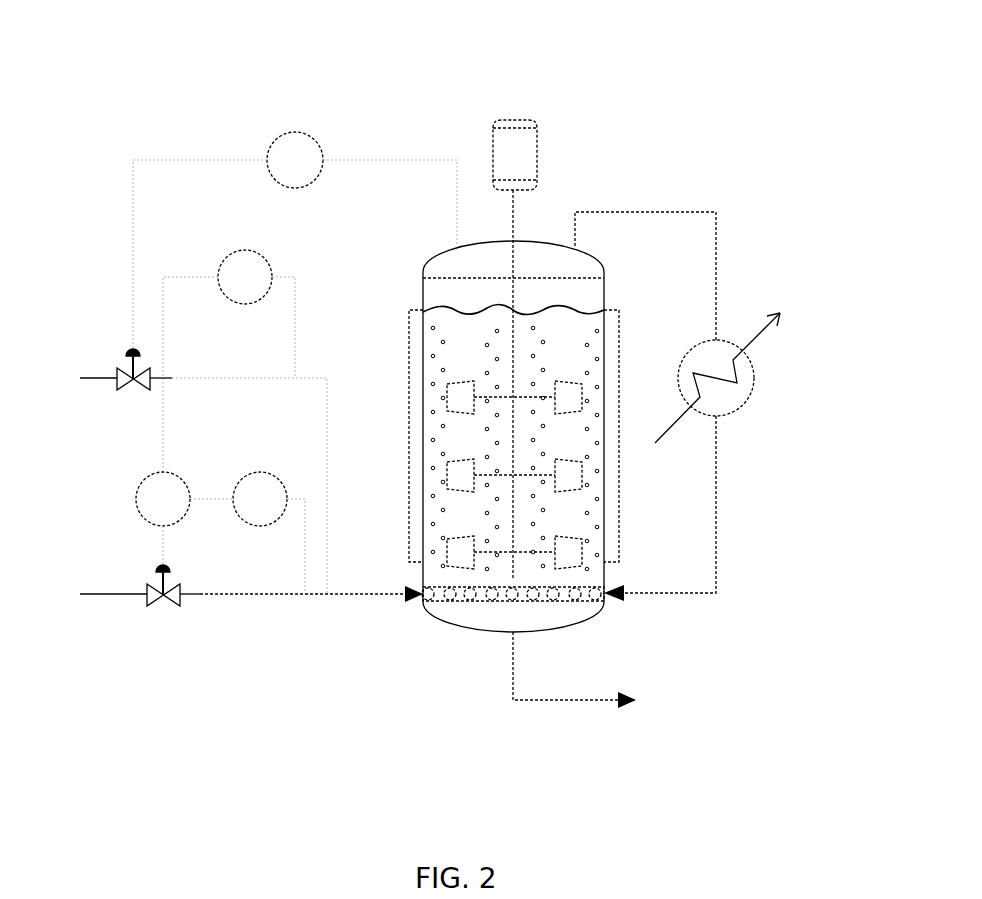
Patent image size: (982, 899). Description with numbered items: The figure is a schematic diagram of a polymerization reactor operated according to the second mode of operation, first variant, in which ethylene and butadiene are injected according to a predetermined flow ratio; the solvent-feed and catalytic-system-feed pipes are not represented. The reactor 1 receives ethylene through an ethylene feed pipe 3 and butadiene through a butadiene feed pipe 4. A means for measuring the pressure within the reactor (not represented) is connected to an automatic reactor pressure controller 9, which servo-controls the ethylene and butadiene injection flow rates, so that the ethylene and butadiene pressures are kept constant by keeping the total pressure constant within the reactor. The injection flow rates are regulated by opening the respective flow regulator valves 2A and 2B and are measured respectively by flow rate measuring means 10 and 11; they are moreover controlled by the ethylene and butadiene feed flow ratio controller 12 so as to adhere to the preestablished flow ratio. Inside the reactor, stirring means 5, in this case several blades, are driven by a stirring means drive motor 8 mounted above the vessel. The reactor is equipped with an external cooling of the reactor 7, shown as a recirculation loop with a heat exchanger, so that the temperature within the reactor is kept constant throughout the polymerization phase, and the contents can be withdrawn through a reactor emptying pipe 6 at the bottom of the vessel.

The reactor 1 is at (597, 617).
The flow regulator valve 2A is at (129, 328).
The flow regulator valve 2B is at (170, 622).
The ethylene feed pipe 3 is at (186, 470).
The butadiene feed pipe 4 is at (233, 583).
The stirring means 5 is at (592, 552).
The reactor emptying pipe 6 is at (549, 670).
The external cooling of the reactor 7 is at (687, 406).
The stirring means drive motor 8 is at (527, 155).
The automatic reactor pressure controller 9 is at (295, 218).
The means for measuring flow rate 10 is at (229, 338).
The means for measuring flow rate 11 is at (247, 508).
The ethylene and butadiene feed flow ratio controller 12 is at (138, 510).